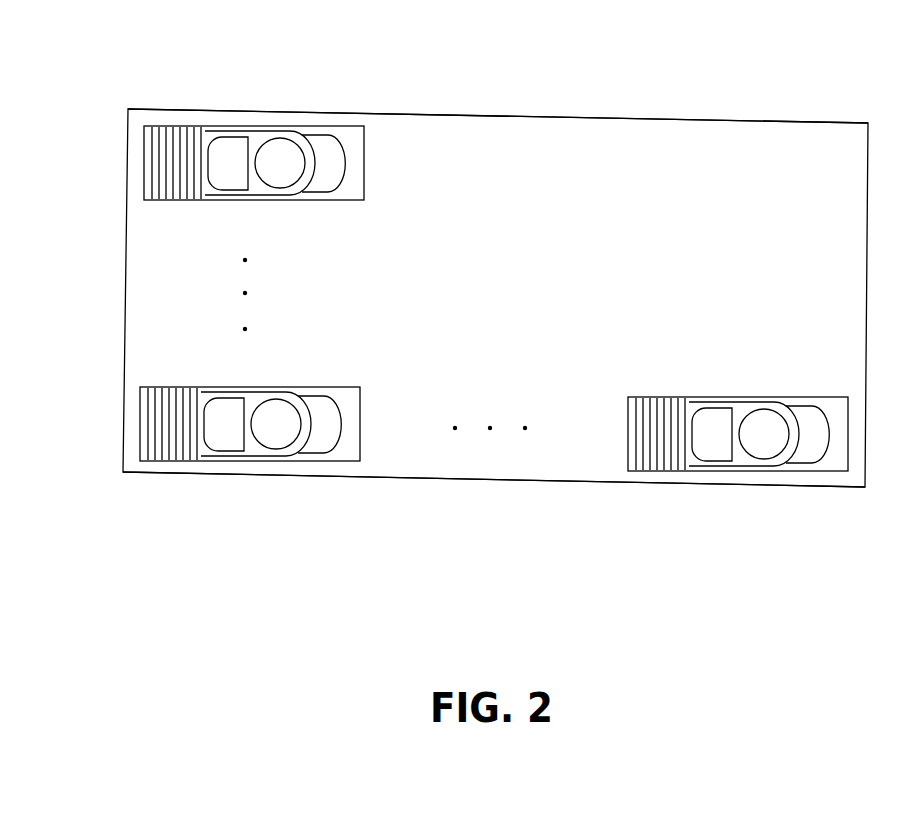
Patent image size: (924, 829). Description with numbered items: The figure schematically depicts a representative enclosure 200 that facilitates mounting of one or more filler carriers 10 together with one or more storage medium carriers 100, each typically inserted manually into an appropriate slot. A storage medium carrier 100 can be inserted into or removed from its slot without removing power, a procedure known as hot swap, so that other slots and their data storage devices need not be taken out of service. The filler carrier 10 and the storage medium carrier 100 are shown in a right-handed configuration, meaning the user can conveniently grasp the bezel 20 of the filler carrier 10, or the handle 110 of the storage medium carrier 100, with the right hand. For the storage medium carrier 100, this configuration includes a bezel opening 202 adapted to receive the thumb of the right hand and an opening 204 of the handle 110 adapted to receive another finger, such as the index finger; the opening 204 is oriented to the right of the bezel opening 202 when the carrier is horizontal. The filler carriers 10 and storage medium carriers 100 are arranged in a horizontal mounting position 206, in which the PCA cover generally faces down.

The enclosure 200 is at (540, 116).
The bezel 20 is at (226, 104).
The handle 110 is at (214, 482).
The filler carrier 10 is at (364, 155).
The storage medium carrier 100 is at (494, 389).
The bezel opening 202 is at (275, 389).
The opening of the handle 204 is at (350, 406).
The horizontal mounting position 206 is at (458, 316).